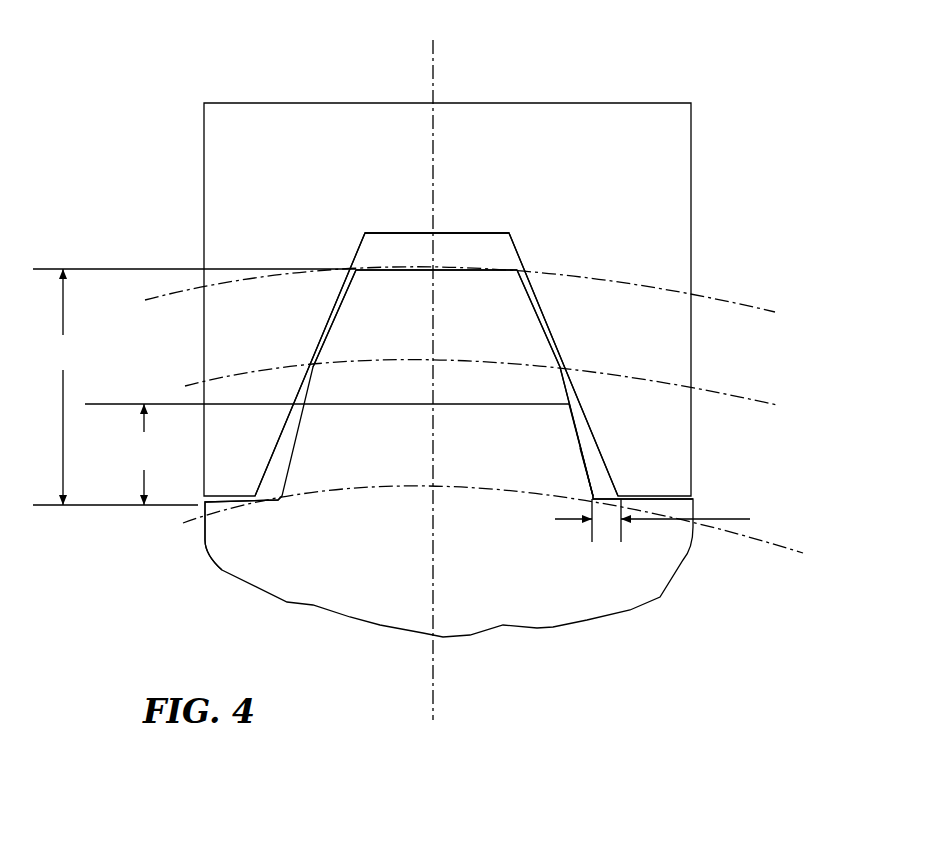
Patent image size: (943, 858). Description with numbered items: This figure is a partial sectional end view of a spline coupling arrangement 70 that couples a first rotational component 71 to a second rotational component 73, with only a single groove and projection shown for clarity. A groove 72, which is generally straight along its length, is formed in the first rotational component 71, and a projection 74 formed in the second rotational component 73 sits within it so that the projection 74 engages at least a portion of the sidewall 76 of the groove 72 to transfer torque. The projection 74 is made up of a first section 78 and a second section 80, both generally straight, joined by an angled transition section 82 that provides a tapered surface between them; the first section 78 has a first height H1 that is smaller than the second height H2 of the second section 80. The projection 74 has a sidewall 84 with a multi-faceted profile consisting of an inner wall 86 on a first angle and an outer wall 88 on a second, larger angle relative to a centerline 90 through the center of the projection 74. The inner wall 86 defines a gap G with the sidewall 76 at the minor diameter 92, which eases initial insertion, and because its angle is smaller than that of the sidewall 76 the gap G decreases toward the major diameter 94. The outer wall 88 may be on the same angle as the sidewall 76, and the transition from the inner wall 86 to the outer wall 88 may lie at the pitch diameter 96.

The spline coupling arrangement 70 is at (762, 163).
The first rotational component 71 is at (287, 103).
The groove 72 is at (393, 245).
The second rotational component 73 is at (680, 573).
The projection 74 is at (328, 460).
The sidewall 76 is at (509, 236).
The first section 78 is at (590, 472).
The second section 80 is at (337, 308).
The transition section 82 is at (345, 338).
The sidewall 84 is at (572, 393).
The inner wall 86 is at (587, 453).
The outer wall 88 is at (540, 312).
The centerline 90 is at (433, 72).
The minor diameter 92 is at (783, 547).
The major diameter 94 is at (763, 310).
The pitch diameter 96 is at (768, 397).
The first height H1 is at (144, 454).
The second height H2 is at (194, 387).
The gap G is at (667, 520).